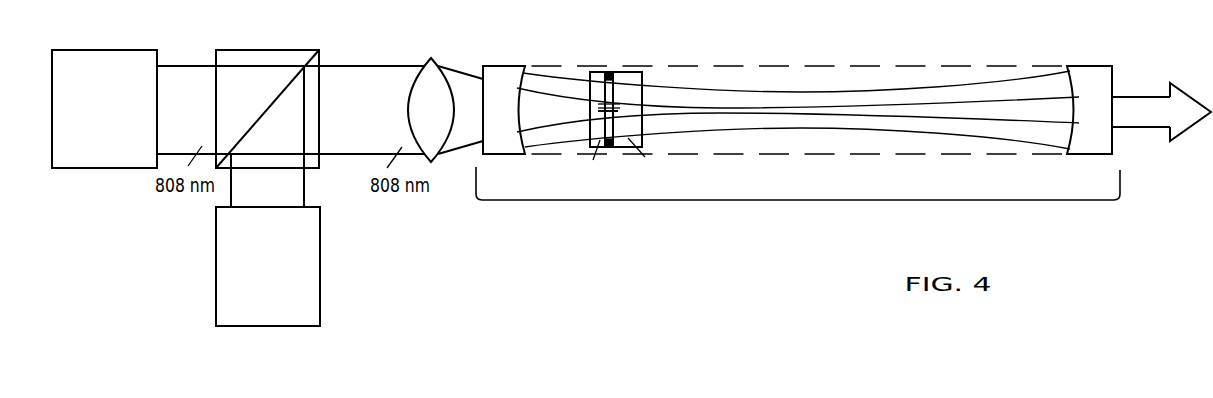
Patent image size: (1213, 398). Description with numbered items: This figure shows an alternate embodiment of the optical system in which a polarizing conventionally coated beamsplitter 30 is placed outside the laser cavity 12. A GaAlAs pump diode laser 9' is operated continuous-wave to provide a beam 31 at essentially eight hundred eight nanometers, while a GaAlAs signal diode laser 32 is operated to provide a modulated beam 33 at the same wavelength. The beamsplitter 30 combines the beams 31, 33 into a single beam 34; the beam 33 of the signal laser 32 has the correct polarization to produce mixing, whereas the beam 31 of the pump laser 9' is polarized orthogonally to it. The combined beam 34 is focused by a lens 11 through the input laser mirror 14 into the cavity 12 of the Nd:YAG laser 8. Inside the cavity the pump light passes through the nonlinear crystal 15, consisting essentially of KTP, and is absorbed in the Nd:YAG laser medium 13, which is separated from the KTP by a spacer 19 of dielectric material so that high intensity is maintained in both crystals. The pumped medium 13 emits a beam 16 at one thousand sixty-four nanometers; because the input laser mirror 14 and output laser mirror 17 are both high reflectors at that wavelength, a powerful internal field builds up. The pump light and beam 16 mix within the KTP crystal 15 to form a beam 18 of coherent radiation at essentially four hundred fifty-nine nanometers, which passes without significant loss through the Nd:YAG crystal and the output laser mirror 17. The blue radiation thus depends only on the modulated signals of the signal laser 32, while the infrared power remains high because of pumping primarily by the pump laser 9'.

The Nd:YAG laser 8 is at (802, 200).
The GaAlAs pump diode laser 9' is at (104, 109).
The lens 11 is at (423, 117).
The cavity 12 is at (725, 65).
The Nd:YAG laser medium 13 is at (630, 71).
The input laser mirror 14 is at (506, 117).
The nonlinear crystal 15 is at (598, 71).
The beam 16 is at (1008, 78).
The output laser mirror 17 is at (1107, 125).
The beam 18 is at (1012, 101).
The spacer 19 is at (612, 71).
The beamsplitter 30 is at (245, 48).
The beam 31 is at (186, 110).
The GaAlAs signal diode laser 32 is at (259, 317).
The beam 33 is at (267, 136).
The beam 34 is at (401, 110).